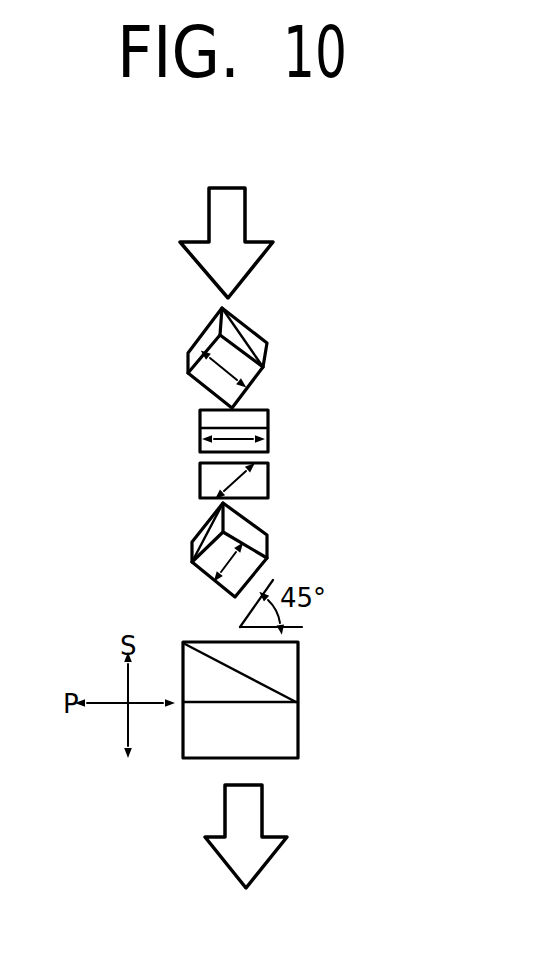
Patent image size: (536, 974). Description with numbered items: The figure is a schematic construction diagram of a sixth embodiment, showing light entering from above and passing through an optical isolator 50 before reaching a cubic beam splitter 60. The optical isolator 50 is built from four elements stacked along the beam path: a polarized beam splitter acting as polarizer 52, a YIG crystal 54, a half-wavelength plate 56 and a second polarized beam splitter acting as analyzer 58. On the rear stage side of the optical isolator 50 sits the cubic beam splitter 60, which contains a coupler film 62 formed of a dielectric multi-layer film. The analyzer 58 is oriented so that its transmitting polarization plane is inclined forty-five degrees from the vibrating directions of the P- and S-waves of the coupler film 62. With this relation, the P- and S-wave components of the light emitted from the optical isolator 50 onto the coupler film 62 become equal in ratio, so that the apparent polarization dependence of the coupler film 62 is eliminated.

The optical isolator 50 is at (197, 455).
The polarized beam splitter (polarizer) 52 is at (267, 343).
The YIG crystal 54 is at (268, 417).
The ½ wavelength plate 56 is at (268, 475).
The polarized beam splitter (analyzer) 58 is at (258, 540).
The cubic beam splitter 60 is at (287, 727).
The coupler film 62 is at (260, 683).